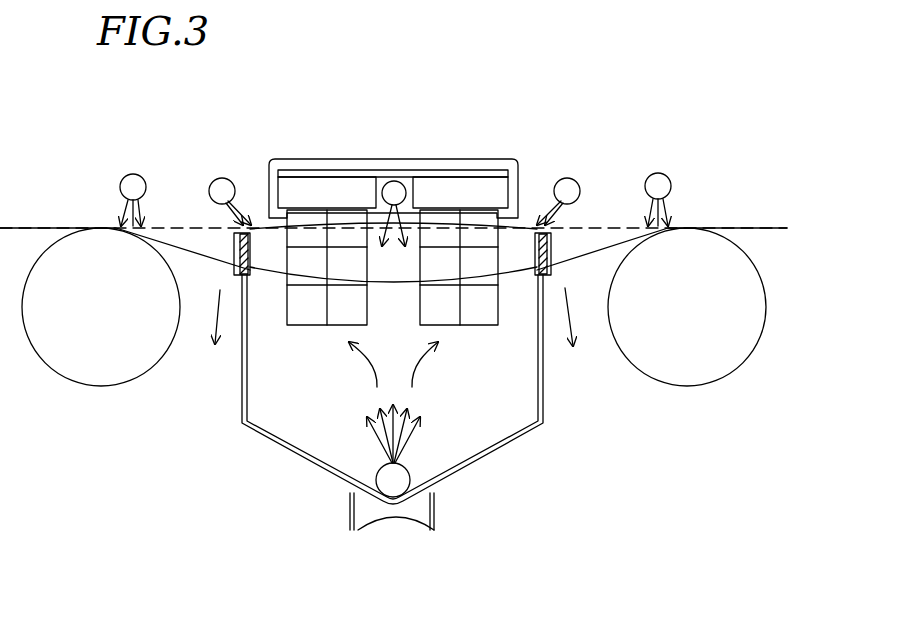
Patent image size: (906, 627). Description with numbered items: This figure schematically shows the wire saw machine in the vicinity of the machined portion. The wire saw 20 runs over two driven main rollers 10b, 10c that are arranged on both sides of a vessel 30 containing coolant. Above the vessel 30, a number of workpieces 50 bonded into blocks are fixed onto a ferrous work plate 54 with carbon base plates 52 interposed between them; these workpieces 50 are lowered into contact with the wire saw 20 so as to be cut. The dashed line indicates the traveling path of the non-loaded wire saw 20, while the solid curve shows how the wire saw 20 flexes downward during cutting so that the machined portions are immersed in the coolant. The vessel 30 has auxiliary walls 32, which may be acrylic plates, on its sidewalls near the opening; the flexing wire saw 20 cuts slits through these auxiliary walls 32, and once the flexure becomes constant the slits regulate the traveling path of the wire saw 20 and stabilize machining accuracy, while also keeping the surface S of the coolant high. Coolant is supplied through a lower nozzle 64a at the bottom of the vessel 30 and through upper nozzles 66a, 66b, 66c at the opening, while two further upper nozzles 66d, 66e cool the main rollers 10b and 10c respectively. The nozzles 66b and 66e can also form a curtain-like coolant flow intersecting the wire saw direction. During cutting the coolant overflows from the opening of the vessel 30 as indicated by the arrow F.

The main roller 10b is at (80, 372).
The main roller 10c is at (697, 367).
The wire saw 20 is at (592, 253).
The vessel 30 is at (497, 452).
The auxiliary walls 32 is at (583, 233).
The workpieces 50 is at (485, 308).
The carbon base plates 52 is at (487, 183).
The work plate 54 is at (442, 166).
The lower nozzle 64a is at (400, 478).
The upper nozzle 66a is at (394, 181).
The upper nozzle 66b is at (222, 178).
The upper nozzle 66c is at (567, 178).
The upper nozzle 66d is at (133, 174).
The upper nozzle 66e is at (658, 173).
The surface of the coolant S is at (380, 215).
The arrow indicating coolant overflow F is at (216, 314).